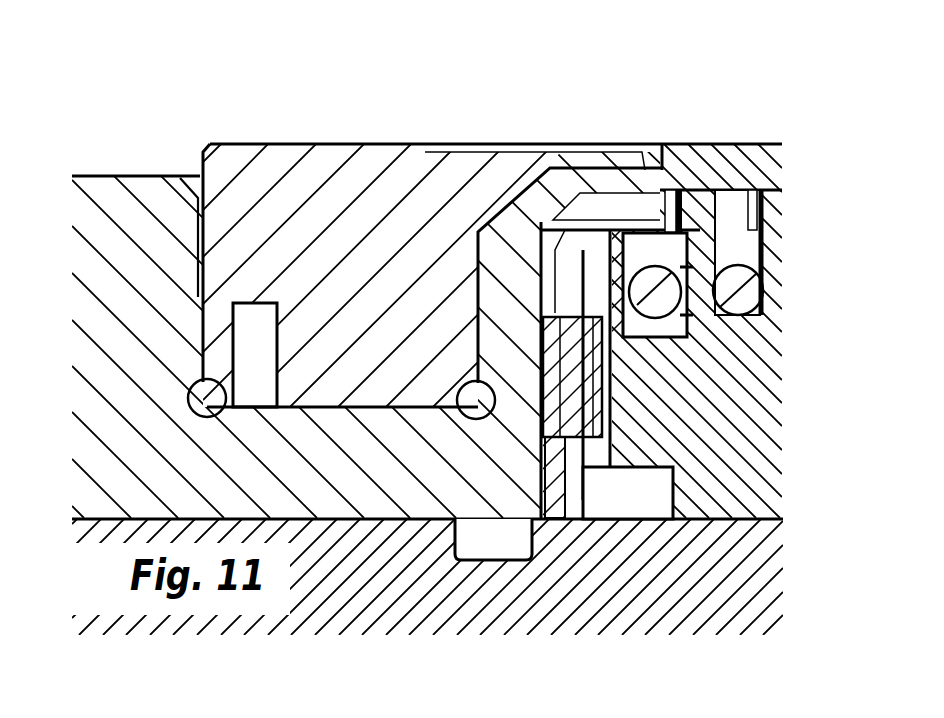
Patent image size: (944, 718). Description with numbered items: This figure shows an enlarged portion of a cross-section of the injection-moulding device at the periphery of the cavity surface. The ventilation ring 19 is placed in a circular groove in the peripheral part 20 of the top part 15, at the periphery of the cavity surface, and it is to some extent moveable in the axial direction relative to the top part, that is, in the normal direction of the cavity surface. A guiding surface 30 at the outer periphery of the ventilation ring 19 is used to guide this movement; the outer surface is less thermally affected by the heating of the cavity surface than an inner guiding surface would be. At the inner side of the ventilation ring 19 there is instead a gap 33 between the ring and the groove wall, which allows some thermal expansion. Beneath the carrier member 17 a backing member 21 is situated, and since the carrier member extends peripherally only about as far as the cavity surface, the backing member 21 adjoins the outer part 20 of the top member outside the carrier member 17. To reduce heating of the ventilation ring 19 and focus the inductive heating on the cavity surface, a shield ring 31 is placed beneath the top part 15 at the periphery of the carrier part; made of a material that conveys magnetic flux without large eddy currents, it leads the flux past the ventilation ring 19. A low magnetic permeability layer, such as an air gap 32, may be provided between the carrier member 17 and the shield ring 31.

The top part 15 is at (693, 160).
The carrier member 17 is at (745, 453).
The ventilation ring 19 is at (332, 208).
The peripheral part 20 is at (158, 200).
The backing member 21 is at (627, 593).
The guiding surface 30 is at (207, 333).
The shield ring 31 is at (556, 162).
The air gap 32 is at (605, 207).
The gap 33 is at (480, 348).